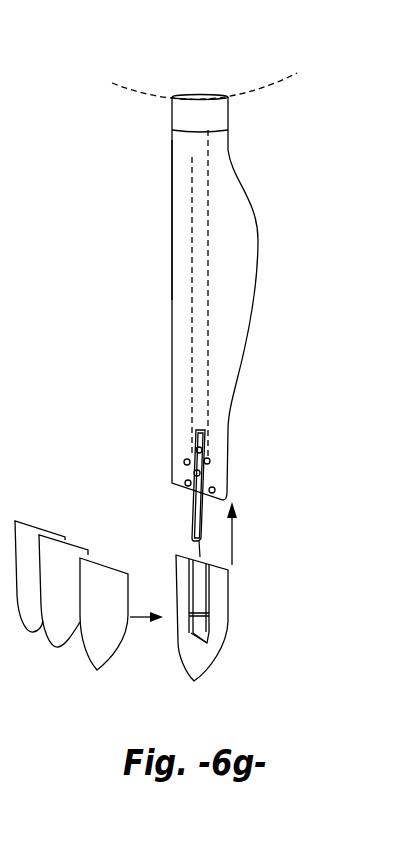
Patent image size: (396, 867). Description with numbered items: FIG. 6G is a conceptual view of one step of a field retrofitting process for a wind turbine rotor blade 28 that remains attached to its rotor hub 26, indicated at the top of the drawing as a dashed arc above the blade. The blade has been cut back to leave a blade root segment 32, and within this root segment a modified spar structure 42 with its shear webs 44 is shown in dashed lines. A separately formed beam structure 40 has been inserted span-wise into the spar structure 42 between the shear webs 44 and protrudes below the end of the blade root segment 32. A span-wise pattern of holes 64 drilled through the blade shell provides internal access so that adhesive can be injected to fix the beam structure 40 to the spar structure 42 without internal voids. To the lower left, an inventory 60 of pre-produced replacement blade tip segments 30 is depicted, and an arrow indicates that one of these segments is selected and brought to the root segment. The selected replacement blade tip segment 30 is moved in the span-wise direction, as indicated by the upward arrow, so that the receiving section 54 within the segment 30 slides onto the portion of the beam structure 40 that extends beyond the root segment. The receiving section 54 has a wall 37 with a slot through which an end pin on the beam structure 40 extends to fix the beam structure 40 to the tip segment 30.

The rotor hub 26 is at (131, 92).
The rotor blade 28 is at (277, 284).
The blade root segment 32 is at (172, 214).
The spar structure 42 is at (232, 342).
The shear webs 44 is at (210, 412).
The beam structure 40 is at (192, 512).
The holes 64 is at (184, 461).
The receiving section 54 is at (213, 579).
The replacement blade tip segment 30 is at (228, 625).
The wall 37 is at (208, 643).
The inventory 60 is at (44, 670).